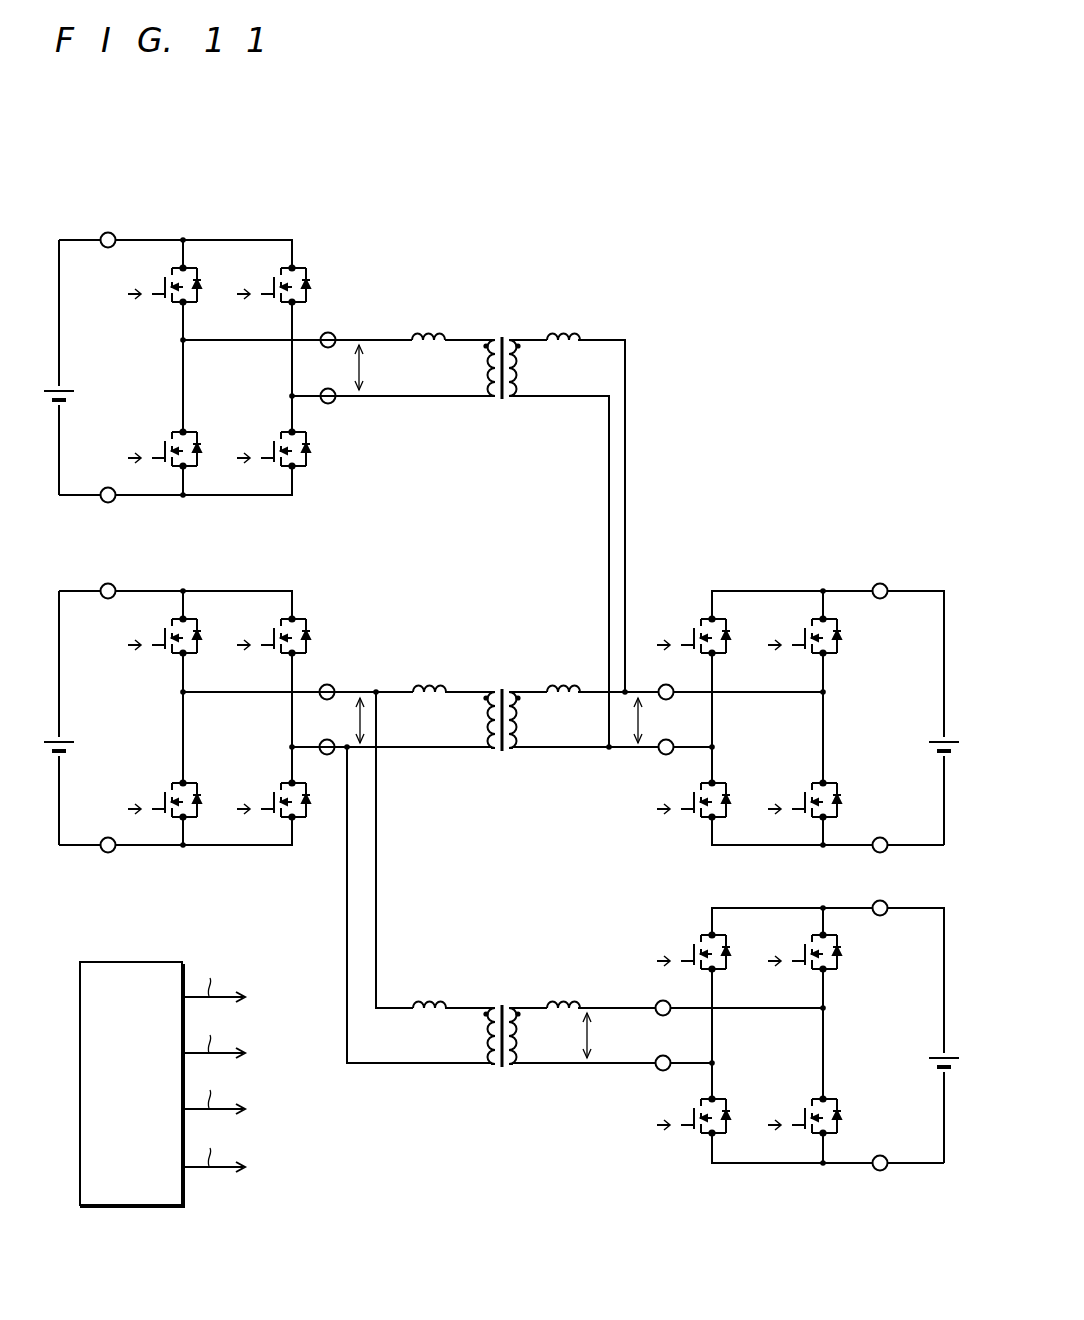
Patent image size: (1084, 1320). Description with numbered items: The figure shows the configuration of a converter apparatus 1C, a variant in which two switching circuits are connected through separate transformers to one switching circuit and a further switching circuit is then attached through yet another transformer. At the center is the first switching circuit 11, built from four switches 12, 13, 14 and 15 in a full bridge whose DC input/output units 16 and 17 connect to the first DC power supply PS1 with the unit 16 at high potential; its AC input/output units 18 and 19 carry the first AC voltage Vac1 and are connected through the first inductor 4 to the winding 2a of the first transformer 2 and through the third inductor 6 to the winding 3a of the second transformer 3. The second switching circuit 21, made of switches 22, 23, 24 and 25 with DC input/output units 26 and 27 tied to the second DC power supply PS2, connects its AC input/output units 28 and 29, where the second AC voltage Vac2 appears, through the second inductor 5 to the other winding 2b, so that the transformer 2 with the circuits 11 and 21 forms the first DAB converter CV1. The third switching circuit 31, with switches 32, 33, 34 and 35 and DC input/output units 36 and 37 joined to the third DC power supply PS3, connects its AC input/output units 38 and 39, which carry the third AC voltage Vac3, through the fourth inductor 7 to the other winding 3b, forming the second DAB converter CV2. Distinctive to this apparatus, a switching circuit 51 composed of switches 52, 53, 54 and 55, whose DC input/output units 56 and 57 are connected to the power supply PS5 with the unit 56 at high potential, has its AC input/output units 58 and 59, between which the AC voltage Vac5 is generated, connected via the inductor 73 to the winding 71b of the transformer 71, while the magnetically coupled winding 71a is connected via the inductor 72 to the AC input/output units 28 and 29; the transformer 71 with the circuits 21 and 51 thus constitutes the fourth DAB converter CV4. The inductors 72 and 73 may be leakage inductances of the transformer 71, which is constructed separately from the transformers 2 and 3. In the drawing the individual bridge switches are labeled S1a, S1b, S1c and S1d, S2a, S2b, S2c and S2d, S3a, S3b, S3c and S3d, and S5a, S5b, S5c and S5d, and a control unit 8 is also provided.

The converter apparatus 1C is at (540, 157).
The switching circuit 51 is at (233, 232).
The switch 52 is at (173, 306).
The switch 53 is at (173, 430).
The switch 54 is at (275, 305).
The switch 55 is at (280, 430).
The DC input/output unit 56 is at (103, 248).
The DC input/output unit 57 is at (102, 488).
The AC input/output unit 58 is at (332, 334).
The AC input/output unit 59 is at (328, 405).
The switching element S5a is at (156, 284).
The switching element S5b is at (156, 448).
The switching element S5c is at (264, 284).
The switching element S5d is at (264, 448).
The DC power supply PS5 is at (70, 387).
The fourth DAB converter CV4 is at (426, 242).
The transformer 71 is at (501, 275).
The winding 71a is at (517, 335).
The winding 71b is at (482, 335).
The inductor 72 is at (571, 311).
The inductor 73 is at (426, 311).
The AC voltage Vac5 is at (366, 371).
The first switching circuit 11 is at (234, 585).
The switch 12 is at (173, 657).
The switch 13 is at (173, 781).
The switch 14 is at (275, 656).
The switch 15 is at (280, 781).
The DC input/output unit 16 is at (103, 598).
The DC input/output unit 17 is at (102, 838).
The AC input/output unit 18 is at (332, 685).
The AC input/output unit 19 is at (327, 756).
The switching element S1a is at (156, 635).
The switching element S1b is at (156, 799).
The switching element S1c is at (264, 635).
The switching element S1d is at (264, 799).
The first DC power supply PS1 is at (70, 737).
The first DAB converter CV1 is at (479, 595).
The first transformer 2 is at (500, 640).
The first winding 2a is at (483, 687).
The first winding 2b is at (517, 687).
The first inductor 4 is at (429, 663).
The second inductor 5 is at (563, 663).
The first AC voltage Vac1 is at (366, 721).
The second AC voltage Vac2 is at (633, 721).
The second switching circuit 21 is at (758, 585).
The switch 22 is at (718, 657).
The switch 23 is at (716, 780).
The switch 24 is at (810, 657).
The switch 25 is at (818, 780).
The DC input/output unit 26 is at (883, 599).
The DC input/output unit 27 is at (883, 837).
The AC input/output unit 28 is at (668, 684).
The AC input/output unit 29 is at (668, 755).
The switching element S2a is at (685, 635).
The switching element S2b is at (685, 799).
The switching element S2c is at (796, 635).
The switching element S2d is at (796, 799).
The second DC power supply PS2 is at (935, 740).
The second DAB converter CV2 is at (479, 900).
The second transformer 3 is at (500, 955).
The second winding 3a is at (483, 1003).
The second winding 3b is at (517, 1003).
The third inductor 6 is at (429, 978).
The fourth inductor 7 is at (563, 978).
The third AC voltage Vac3 is at (582, 1040).
The third switching circuit 31 is at (700, 906).
The switch 32 is at (718, 973).
The switch 33 is at (716, 1096).
The switch 34 is at (810, 973).
The switch 35 is at (818, 1096).
The DC input/output unit 36 is at (883, 916).
The DC input/output unit 37 is at (883, 1155).
The AC input/output unit 38 is at (663, 1001).
The AC input/output unit 39 is at (663, 1071).
The switching element S3a is at (685, 951).
The switching element S3b is at (685, 1115).
The switching element S3c is at (796, 951).
The switching element S3d is at (796, 1115).
The third DC power supply PS3 is at (935, 1056).
The control unit 8 is at (147, 962).